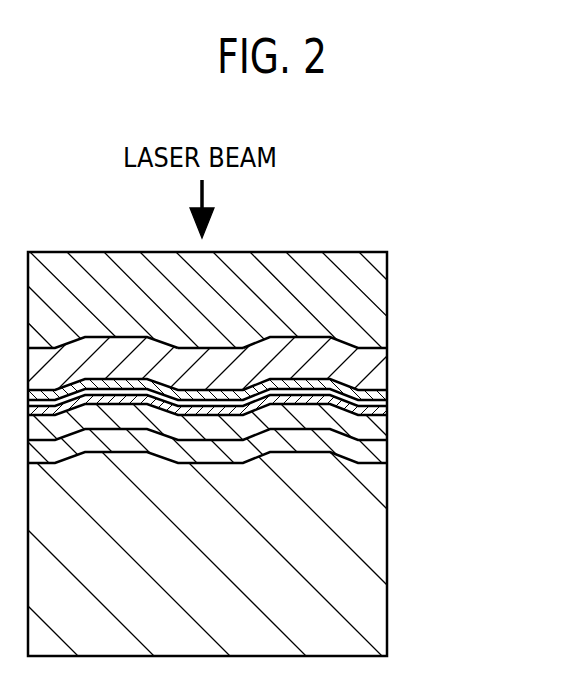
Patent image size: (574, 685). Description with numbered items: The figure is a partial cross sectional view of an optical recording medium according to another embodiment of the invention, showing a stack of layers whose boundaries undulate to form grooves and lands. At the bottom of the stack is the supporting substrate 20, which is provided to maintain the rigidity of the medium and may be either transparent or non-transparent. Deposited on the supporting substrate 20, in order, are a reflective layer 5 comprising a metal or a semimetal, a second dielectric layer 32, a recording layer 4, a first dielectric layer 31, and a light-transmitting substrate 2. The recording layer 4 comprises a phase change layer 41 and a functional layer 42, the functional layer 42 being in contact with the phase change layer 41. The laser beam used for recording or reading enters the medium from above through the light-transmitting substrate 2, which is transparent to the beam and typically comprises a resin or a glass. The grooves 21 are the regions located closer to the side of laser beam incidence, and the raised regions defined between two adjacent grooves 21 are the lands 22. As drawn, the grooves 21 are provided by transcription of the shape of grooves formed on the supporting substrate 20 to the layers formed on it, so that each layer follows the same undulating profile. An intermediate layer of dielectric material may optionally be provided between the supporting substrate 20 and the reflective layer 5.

The light-transmitting substrate 2 is at (387, 285).
The grooves 21 is at (287, 330).
The lands 22 is at (208, 348).
The first dielectric layer 31 is at (387, 363).
The recording layer 4 is at (284, 374).
The phase change layer 41 is at (387, 393).
The functional layer 42 is at (387, 407).
The second dielectric layer 32 is at (387, 427).
The reflective layer 5 is at (387, 448).
The supporting substrate 20 is at (387, 503).